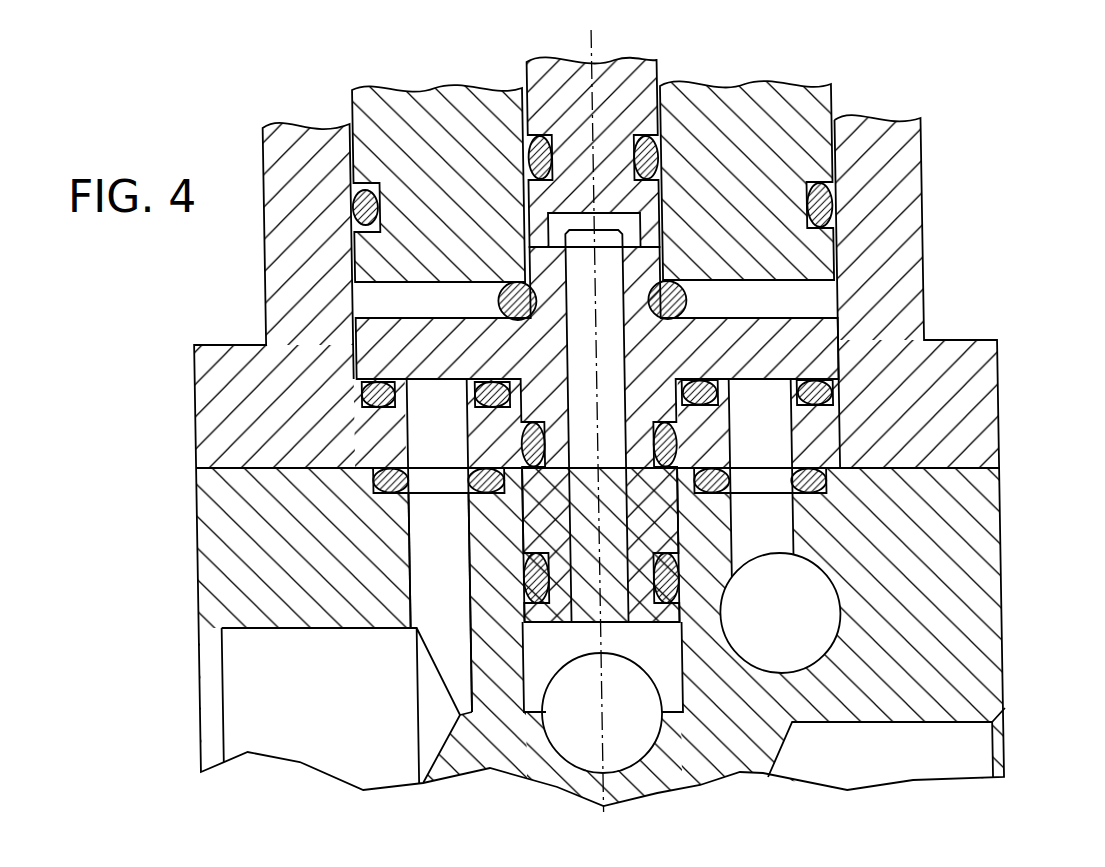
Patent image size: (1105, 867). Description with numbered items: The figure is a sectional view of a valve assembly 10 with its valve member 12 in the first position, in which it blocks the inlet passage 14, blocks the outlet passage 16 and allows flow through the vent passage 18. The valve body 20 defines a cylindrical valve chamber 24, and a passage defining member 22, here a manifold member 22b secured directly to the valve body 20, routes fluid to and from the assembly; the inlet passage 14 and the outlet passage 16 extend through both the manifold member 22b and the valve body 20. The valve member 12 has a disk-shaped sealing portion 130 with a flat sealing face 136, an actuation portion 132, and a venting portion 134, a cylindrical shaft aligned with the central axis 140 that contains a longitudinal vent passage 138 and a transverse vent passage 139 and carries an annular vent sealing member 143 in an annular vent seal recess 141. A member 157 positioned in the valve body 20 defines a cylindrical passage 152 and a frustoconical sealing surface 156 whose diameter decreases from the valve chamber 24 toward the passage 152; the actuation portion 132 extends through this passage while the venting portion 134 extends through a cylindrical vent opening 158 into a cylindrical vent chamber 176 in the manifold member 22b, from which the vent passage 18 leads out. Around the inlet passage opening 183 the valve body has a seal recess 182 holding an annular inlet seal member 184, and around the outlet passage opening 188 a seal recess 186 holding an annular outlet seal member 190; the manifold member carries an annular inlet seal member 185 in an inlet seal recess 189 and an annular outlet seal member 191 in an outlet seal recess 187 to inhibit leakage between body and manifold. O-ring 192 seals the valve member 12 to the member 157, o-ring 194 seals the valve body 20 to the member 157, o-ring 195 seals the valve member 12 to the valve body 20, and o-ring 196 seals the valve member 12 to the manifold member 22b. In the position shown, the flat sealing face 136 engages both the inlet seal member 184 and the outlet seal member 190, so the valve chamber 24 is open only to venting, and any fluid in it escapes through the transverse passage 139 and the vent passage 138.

The valve assembly 10 is at (956, 226).
The valve member 12 is at (540, 250).
The inlet passage 14 is at (420, 578).
The outlet passage 16 is at (768, 455).
The vent passage 18 is at (620, 626).
The valve body 20 is at (895, 162).
The passage defining member 22 is at (960, 655).
The manifold member 22b is at (953, 695).
The valve chamber 24 is at (797, 300).
The sealing portion 130 is at (390, 332).
The actuation portion 132 is at (663, 62).
The venting portion 134 is at (648, 507).
The flat sealing face 136 is at (765, 455).
The longitudinal vent passage 138 is at (608, 365).
The transverse vent passage 139 is at (662, 186).
The central axis 140 is at (601, 47).
The annular vent seal recess 141 is at (540, 288).
The annular vent sealing member 143 is at (675, 282).
The cylindrical passage 152 is at (521, 108).
The frustoconical sealing surface 156 is at (680, 265).
The member 157 is at (778, 100).
The cylindrical vent opening 158 is at (519, 424).
The cylindrical vent chamber 176 is at (663, 675).
The seal recess 182 is at (368, 410).
The inlet passage opening 183 is at (428, 395).
The annular inlet seal member 184 is at (362, 396).
The annular inlet seal member 185 is at (372, 481).
The seal recess 186 is at (834, 412).
The outlet seal recess 187 is at (824, 496).
The outlet passage opening 188 is at (752, 392).
The inlet seal recess 189 is at (377, 492).
The annular outlet seal member 190 is at (832, 398).
The annular outlet seal member 191 is at (818, 480).
The o-ring 192 is at (537, 157).
The o-ring 194 is at (360, 205).
The o-ring 195 is at (468, 517).
The o-ring 196 is at (520, 592).